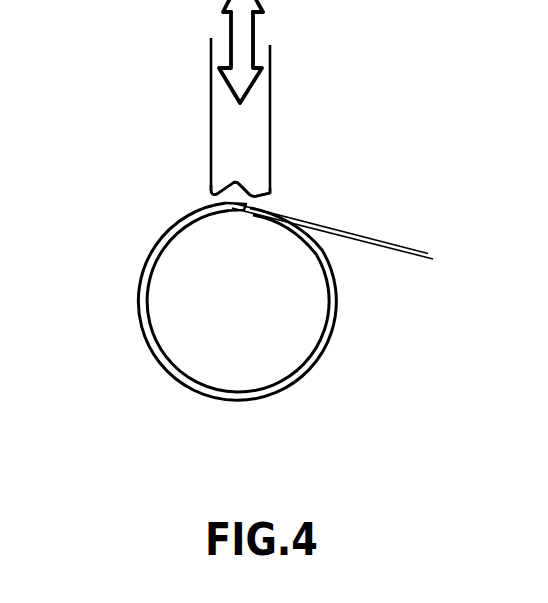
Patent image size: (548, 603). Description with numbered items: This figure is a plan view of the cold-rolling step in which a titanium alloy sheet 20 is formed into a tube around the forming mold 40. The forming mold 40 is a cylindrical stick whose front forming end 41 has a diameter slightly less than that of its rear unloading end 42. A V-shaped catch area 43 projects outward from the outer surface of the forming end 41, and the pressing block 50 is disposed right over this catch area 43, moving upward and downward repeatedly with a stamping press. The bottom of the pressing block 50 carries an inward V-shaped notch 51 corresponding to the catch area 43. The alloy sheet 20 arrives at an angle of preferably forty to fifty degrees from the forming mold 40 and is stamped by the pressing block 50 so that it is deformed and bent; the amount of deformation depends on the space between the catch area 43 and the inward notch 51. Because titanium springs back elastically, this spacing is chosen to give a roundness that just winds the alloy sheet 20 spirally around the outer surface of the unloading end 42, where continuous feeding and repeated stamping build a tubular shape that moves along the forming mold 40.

The 6-4Ti alloy sheet 20 is at (393, 243).
The forming mold 40 is at (240, 279).
The forming end 41 is at (327, 325).
The unloading end 42 is at (337, 303).
The catch area 43 is at (250, 207).
The pressing block 50 is at (210, 130).
The inward notch 51 is at (215, 185).